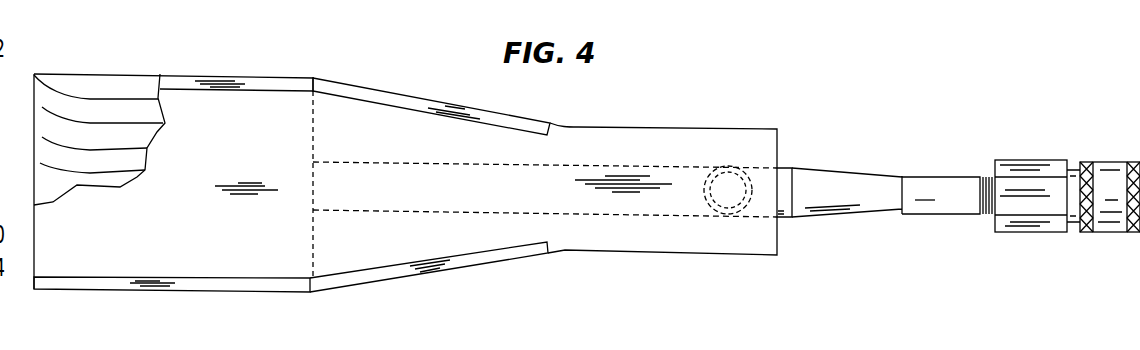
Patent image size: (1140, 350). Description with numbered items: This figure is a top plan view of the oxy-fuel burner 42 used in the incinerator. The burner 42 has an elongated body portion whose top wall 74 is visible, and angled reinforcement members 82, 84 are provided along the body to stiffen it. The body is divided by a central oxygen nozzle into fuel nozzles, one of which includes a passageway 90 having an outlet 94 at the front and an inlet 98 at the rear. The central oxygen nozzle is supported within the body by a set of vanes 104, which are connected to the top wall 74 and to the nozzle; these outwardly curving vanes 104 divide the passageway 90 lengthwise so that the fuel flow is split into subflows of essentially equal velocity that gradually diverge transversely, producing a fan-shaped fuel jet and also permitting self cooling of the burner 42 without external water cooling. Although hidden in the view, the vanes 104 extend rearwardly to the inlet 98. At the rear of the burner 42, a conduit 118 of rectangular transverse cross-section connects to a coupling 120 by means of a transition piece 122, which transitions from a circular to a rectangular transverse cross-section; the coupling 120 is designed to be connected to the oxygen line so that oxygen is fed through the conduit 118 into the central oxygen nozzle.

The burner 42 is at (308, 54).
The top wall 74 is at (227, 263).
The angled reinforcement member 82 is at (262, 82).
The angled reinforcement member 84 is at (282, 283).
The passageway 90 is at (130, 88).
The outlet 94 is at (34, 104).
The inlet 98 is at (315, 108).
The vanes 104 is at (88, 97).
The conduit 118 is at (785, 218).
The coupling 120 is at (1038, 249).
The transition piece 122 is at (834, 170).